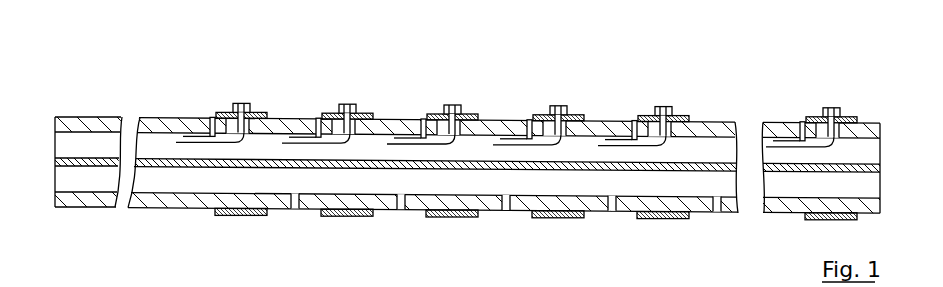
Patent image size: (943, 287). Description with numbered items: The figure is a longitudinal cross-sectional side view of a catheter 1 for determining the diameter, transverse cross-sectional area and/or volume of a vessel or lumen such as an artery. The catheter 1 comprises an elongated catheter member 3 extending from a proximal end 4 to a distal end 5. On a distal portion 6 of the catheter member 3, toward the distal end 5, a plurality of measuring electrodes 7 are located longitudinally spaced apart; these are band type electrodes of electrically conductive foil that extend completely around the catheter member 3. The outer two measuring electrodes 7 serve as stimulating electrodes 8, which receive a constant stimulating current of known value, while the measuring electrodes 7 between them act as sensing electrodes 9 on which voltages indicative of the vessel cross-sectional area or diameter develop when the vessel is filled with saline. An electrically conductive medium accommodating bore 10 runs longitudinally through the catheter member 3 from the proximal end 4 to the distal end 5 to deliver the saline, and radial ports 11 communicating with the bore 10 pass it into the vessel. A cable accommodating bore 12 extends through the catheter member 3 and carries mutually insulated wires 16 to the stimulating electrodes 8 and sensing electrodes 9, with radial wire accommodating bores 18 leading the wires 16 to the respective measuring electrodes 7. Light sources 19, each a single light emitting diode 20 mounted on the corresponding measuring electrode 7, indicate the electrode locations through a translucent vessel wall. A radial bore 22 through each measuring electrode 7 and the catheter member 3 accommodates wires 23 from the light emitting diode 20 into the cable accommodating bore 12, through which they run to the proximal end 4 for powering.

The catheter 1 is at (732, 42).
The catheter member 3 is at (158, 118).
The proximal end 4 is at (54, 118).
The distal end 5 is at (880, 124).
The distal portion 6 is at (495, 36).
The measuring electrodes 7 is at (259, 112).
The stimulating electrodes 8 is at (236, 108).
The sensing electrodes 9 is at (338, 112).
The electrically conductive medium accommodating bore 10 is at (433, 183).
The ports 11 is at (294, 210).
The cable accommodating bore 12 is at (717, 148).
The wires 16 is at (209, 134).
The wire accommodating bores 18 is at (208, 120).
The light sources 19 is at (249, 104).
The light emitting diode 20 is at (241, 102).
The radial bore 22 is at (252, 128).
The wires 23 is at (208, 142).